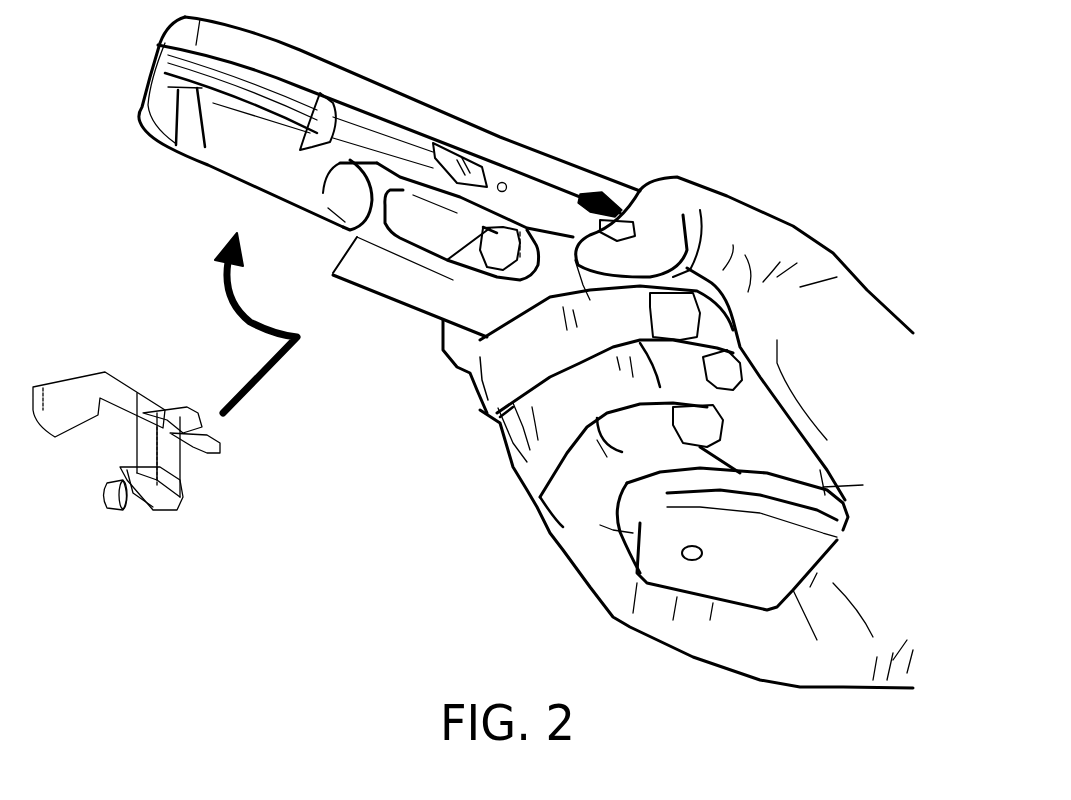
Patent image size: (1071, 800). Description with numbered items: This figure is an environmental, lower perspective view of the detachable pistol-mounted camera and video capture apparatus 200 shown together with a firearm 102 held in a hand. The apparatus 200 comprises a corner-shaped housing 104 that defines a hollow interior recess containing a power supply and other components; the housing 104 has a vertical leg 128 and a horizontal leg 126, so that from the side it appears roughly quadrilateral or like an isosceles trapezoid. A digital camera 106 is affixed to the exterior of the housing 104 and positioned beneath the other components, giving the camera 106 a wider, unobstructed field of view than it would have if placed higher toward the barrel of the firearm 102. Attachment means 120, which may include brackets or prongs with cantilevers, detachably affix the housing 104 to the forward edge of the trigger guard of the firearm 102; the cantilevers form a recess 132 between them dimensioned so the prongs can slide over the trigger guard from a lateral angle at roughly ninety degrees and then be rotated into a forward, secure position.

The detachable pistol-mounted camera and video capture apparatus 200 is at (92, 75).
The firearm 102 is at (510, 177).
The housing 104 is at (173, 490).
The digital camera 106 is at (113, 493).
The attachment means 120 is at (210, 453).
The horizontal leg 126 is at (57, 420).
The vertical leg 128 is at (130, 410).
The recess 132 is at (747, 230).